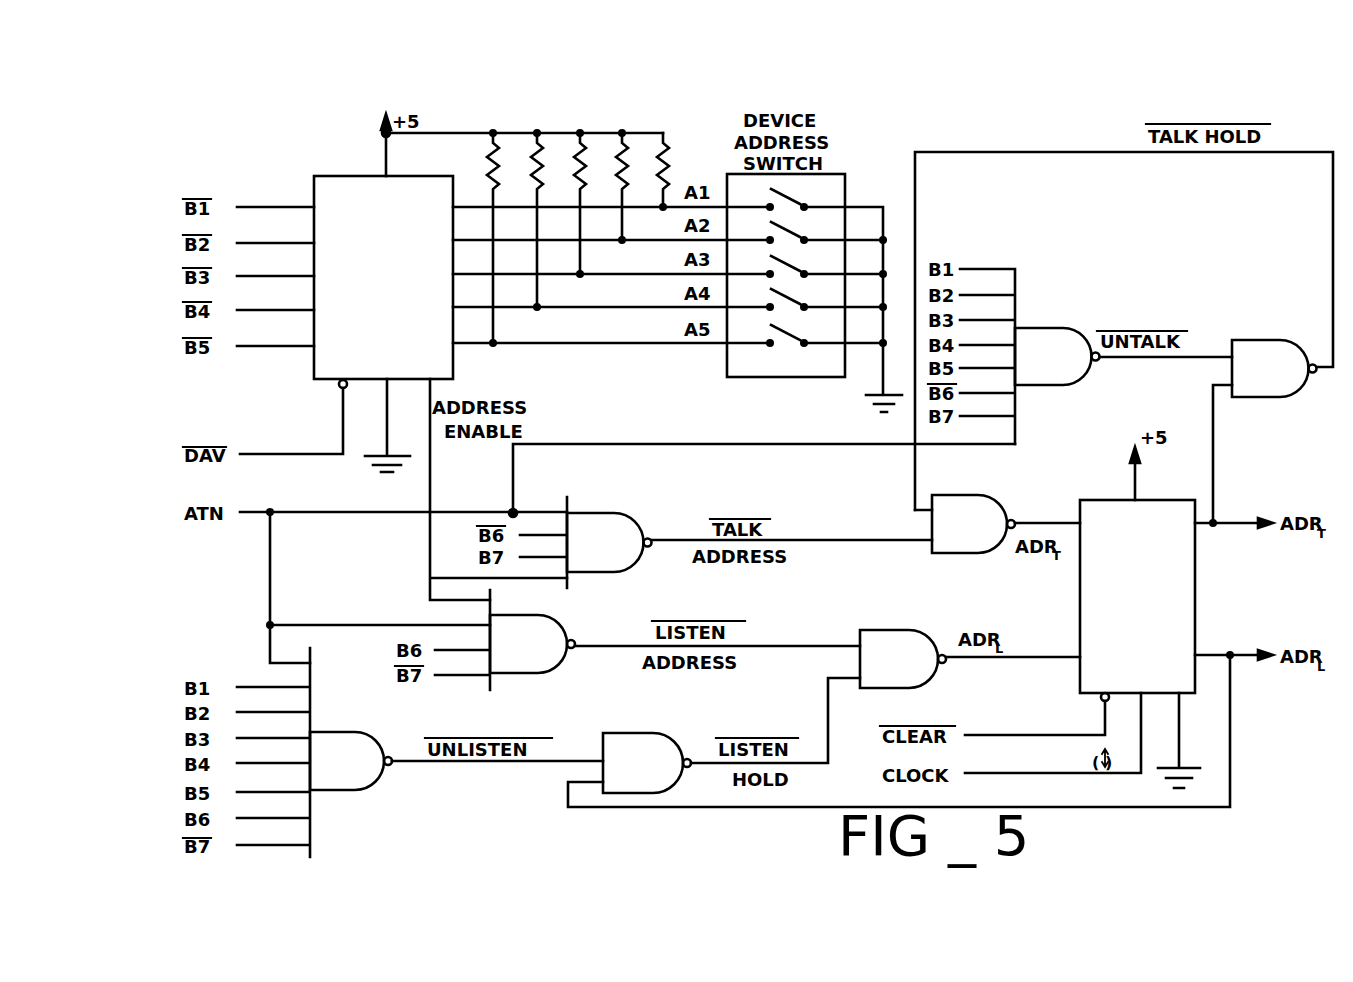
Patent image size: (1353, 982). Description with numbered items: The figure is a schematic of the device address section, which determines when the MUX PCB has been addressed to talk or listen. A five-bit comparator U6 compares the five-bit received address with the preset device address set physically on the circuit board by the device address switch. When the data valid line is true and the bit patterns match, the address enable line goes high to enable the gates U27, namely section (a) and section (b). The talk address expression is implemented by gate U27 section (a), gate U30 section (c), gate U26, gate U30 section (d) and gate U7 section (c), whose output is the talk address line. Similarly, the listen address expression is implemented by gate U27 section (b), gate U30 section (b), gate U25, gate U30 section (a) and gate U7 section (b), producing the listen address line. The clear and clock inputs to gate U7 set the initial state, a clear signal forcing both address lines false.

The five-bit comparator U6 is at (345, 293).
The gate U7 is at (920, 596).
The gate U25 is at (420, 752).
The gate U26 is at (1096, 356).
The gates U27(a) and U27(b) U27 is at (647, 593).
The gates U30 is at (960, 566).